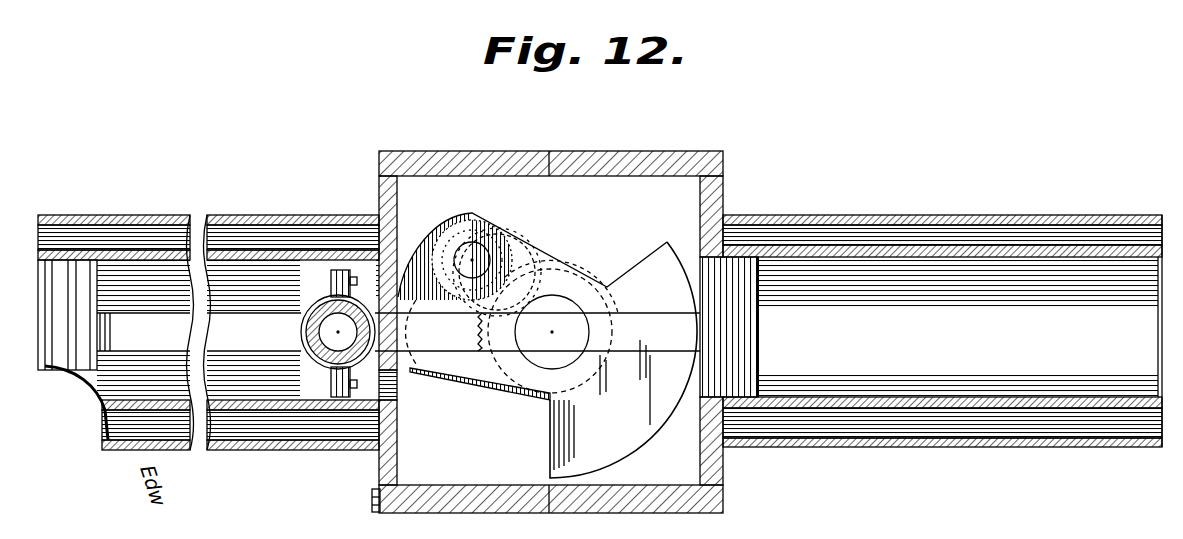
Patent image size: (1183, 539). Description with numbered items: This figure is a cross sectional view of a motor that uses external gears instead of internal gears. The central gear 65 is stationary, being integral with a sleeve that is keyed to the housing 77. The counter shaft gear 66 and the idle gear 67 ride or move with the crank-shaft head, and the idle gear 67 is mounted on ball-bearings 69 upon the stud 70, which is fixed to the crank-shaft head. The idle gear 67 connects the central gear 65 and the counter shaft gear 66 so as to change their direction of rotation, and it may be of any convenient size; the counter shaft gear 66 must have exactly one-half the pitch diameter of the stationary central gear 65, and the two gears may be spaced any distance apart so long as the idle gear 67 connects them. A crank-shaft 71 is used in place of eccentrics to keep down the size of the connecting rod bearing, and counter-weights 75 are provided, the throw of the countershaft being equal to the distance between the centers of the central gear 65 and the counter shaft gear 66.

The housing 77 is at (704, 151).
The ball-bearings 69 is at (445, 236).
The stud 70 is at (478, 254).
The idle gear 67 is at (548, 303).
The central gear 65 is at (571, 266).
The counter-weights 75 is at (637, 432).
The counter shaft gear 66 is at (517, 407).
The crank-shaft 71 is at (404, 372).